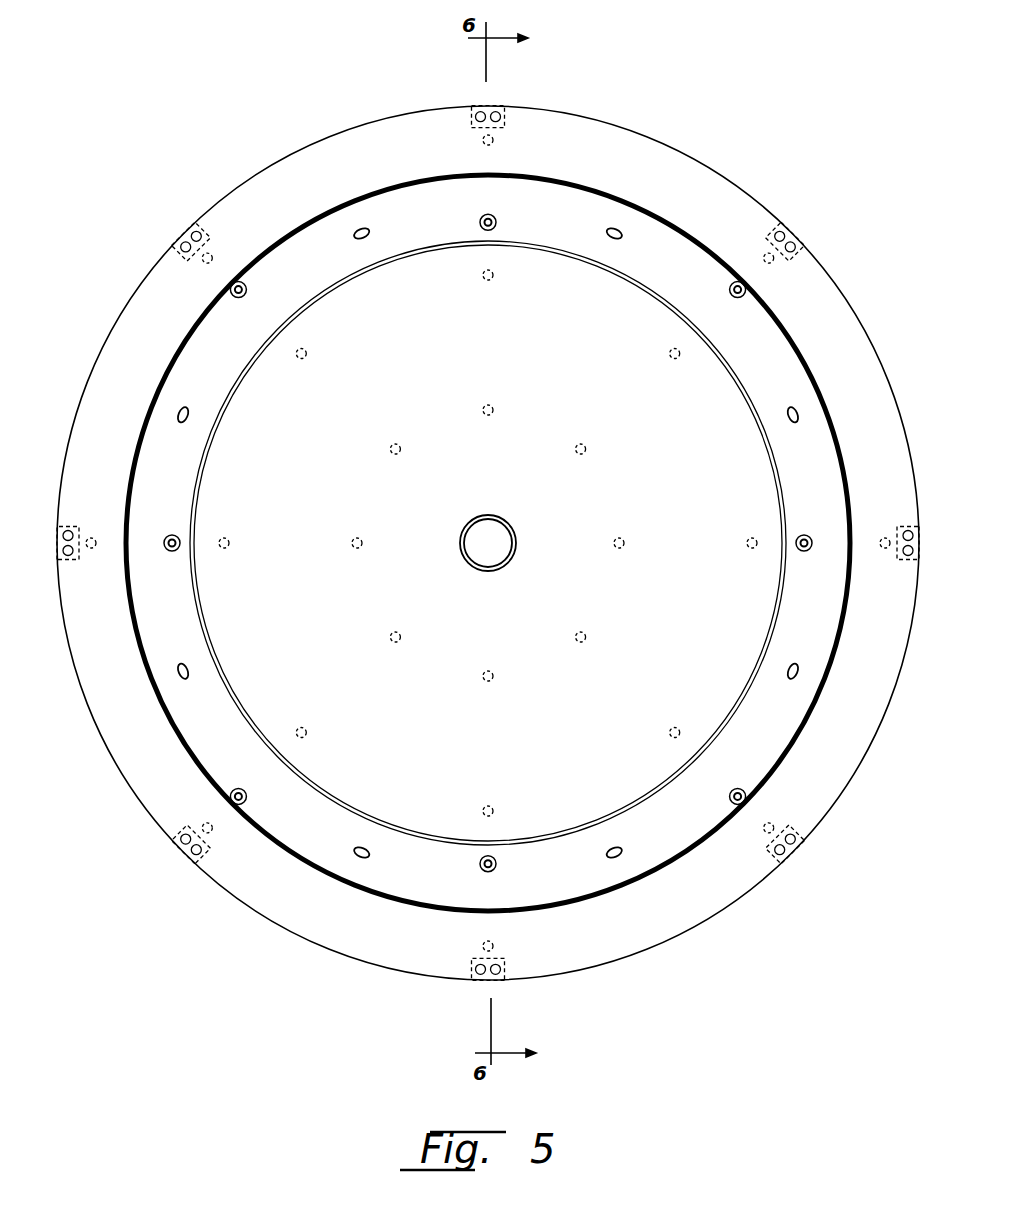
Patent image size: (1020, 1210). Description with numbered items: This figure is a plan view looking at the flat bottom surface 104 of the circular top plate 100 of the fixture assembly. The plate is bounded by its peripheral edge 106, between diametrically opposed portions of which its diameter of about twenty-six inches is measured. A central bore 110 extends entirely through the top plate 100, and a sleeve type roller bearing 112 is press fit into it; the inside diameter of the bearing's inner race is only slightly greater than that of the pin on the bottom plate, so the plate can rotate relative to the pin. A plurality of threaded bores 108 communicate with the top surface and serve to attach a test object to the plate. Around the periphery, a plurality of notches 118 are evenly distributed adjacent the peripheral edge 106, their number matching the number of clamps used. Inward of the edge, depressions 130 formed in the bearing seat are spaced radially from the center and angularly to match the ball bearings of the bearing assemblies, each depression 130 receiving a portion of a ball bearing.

The top plate 100 is at (343, 128).
The bottom surface 104 is at (568, 733).
The peripheral edge 106 is at (647, 134).
The threaded bores 108 is at (482, 409).
The central bore 110 is at (497, 528).
The sleeve type roller bearing 112 is at (513, 554).
The notches 118 is at (492, 108).
The depressions 130 is at (189, 424).